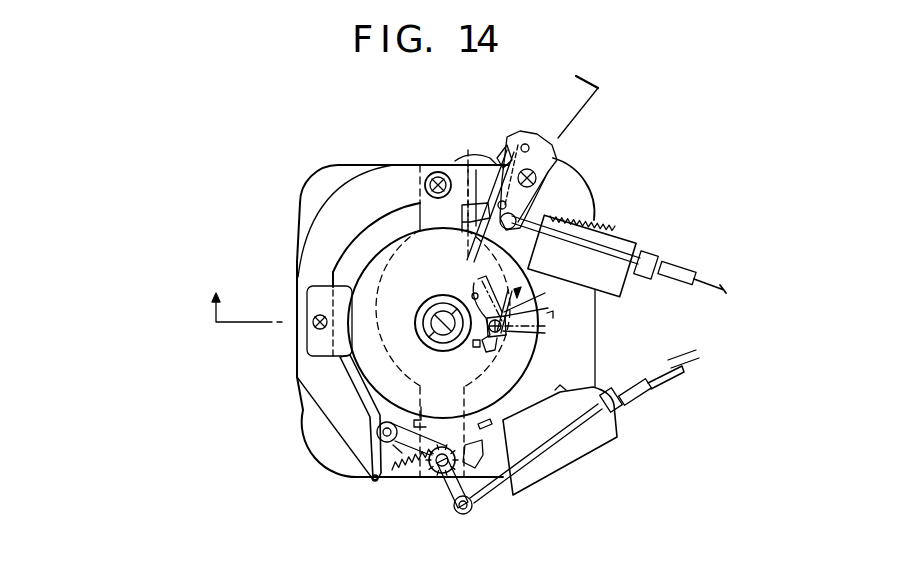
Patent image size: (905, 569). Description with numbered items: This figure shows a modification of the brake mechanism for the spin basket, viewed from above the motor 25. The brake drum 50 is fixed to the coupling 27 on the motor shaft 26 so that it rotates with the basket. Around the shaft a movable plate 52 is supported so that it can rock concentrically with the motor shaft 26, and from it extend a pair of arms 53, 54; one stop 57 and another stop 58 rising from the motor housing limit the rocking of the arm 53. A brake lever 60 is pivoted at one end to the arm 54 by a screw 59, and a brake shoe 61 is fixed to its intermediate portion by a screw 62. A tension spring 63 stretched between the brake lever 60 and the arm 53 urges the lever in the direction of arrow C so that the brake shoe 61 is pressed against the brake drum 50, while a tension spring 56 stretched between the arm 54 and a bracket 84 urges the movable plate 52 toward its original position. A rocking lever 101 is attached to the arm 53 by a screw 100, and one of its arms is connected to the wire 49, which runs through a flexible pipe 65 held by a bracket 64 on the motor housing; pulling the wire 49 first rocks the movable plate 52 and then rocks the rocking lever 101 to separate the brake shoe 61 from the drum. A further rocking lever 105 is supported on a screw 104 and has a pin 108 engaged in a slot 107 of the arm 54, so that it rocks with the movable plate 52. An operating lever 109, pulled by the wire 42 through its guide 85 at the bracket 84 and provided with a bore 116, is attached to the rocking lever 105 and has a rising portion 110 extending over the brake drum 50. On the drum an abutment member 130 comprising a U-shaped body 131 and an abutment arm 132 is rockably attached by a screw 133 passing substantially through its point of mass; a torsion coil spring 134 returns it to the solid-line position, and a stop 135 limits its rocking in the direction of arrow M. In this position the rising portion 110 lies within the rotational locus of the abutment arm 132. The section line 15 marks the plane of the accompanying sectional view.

The motor 25 is at (352, 175).
The motor shaft 26 is at (427, 315).
The coupling 27 is at (429, 339).
The wire 42 is at (727, 290).
The wire 49 is at (678, 372).
The brake drum 50 is at (531, 350).
The movable plate 52 is at (376, 268).
The arm 53 is at (473, 498).
The arm 54 is at (500, 158).
The tension spring 56 is at (618, 216).
The stop 57 is at (426, 402).
The stop 58 is at (492, 428).
The screw 59 is at (434, 172).
The brake lever 60 is at (312, 372).
The brake shoe 61 is at (311, 343).
The screw 62 is at (315, 316).
The tension spring 63 is at (383, 482).
The bracket 64 is at (581, 452).
The flexible pipe 65 is at (637, 398).
The bracket 84 is at (637, 240).
The plunger 85 is at (684, 276).
The screw 100 is at (391, 472).
The rocking lever 101 is at (450, 482).
The screw 104 is at (558, 163).
The rocking lever 105 is at (552, 147).
The slot 107 is at (540, 205).
The pin 108 is at (426, 228).
The operating lever 109 is at (531, 140).
The rising portion 110 is at (468, 254).
The bore 116 is at (523, 144).
The abutment member 130 is at (496, 336).
The body 131 is at (540, 332).
The abutment arm 132 is at (546, 290).
The screw 133 is at (548, 309).
The torsion coil spring 134 is at (479, 286).
The stop 135 is at (474, 346).
The section line 15 is at (402, 193).
The arrow C is at (367, 458).
The arrow M is at (595, 300).